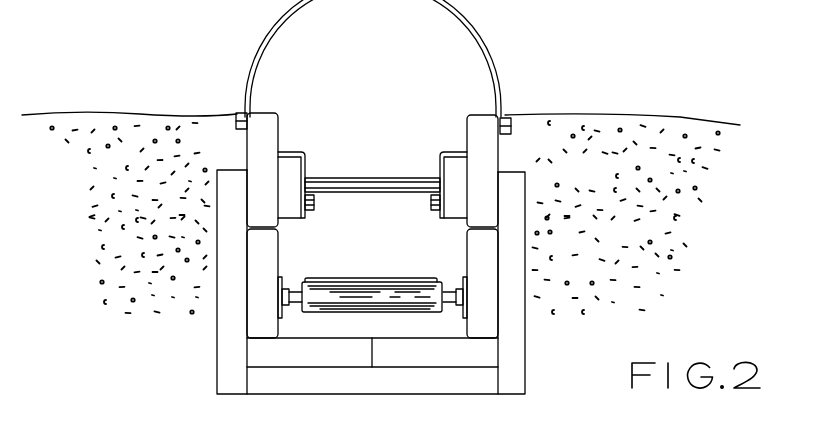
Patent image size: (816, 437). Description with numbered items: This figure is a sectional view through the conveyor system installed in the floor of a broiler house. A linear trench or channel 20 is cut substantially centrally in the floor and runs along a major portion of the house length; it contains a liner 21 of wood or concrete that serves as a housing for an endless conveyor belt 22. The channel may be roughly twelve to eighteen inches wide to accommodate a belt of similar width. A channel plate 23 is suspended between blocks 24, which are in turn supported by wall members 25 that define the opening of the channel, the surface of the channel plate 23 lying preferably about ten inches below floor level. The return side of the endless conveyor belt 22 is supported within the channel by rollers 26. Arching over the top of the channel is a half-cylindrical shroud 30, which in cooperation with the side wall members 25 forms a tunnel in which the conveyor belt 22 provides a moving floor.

The trench or channel 20 is at (377, 267).
The liner 21 is at (220, 368).
The endless conveyor belt 22 is at (404, 178).
The channel plate 23 is at (284, 153).
The blocks 24 is at (287, 200).
The wall members 25 is at (265, 141).
The rollers 26 is at (343, 297).
The half-cylindrical shroud 30 is at (471, 29).